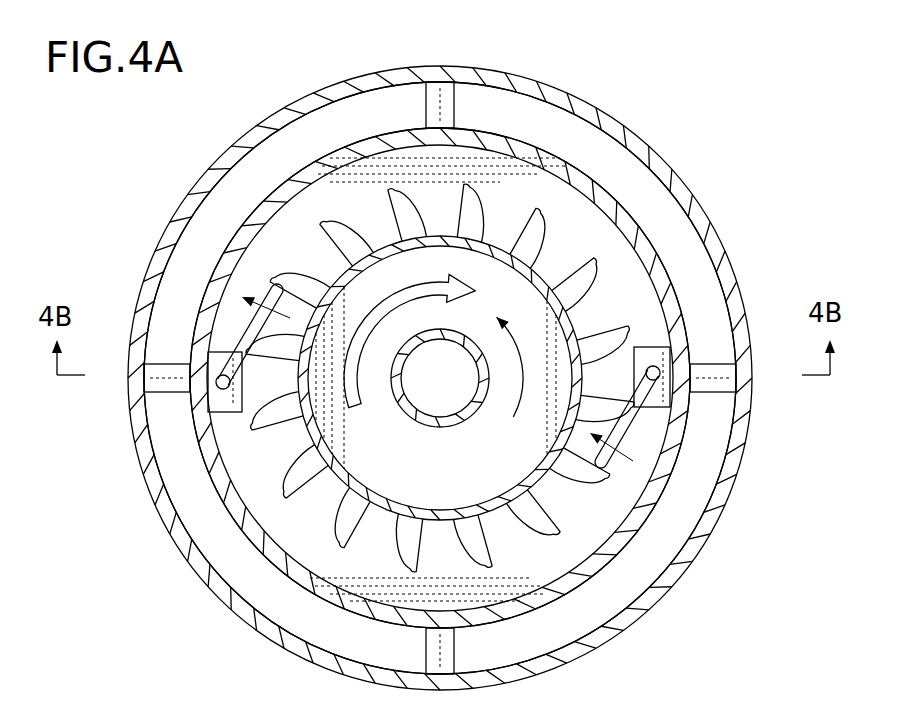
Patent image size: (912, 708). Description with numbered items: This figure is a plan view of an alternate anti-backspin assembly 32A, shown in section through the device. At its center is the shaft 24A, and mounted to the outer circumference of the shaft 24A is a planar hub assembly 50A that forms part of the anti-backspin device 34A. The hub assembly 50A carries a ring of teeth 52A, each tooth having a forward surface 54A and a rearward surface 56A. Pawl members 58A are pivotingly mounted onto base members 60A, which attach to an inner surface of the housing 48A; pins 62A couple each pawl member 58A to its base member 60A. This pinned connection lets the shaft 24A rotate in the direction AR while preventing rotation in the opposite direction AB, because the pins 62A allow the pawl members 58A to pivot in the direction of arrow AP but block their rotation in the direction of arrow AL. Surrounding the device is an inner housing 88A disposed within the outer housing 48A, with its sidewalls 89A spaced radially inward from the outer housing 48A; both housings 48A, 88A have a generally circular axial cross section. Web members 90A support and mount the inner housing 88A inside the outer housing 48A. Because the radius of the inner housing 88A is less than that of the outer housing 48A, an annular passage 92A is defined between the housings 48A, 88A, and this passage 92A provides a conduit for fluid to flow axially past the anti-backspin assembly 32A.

The shaft 24A is at (440, 424).
The anti-backspin assembly 32A is at (441, 354).
The anti-backspin device 34A is at (372, 200).
The outer housing 48A is at (695, 568).
The planar hub assembly 50A is at (325, 435).
The teeth 52A is at (612, 262).
The forward surface 54A is at (333, 518).
The rearward surface 56A is at (335, 592).
The pawl member 58A is at (618, 428).
The base member 60A is at (680, 365).
The pin 62A is at (662, 335).
The inner housing 88A is at (653, 515).
The sidewalls 89A is at (505, 137).
The web members 90A is at (150, 397).
The annular passage 92A is at (173, 472).
The direction of shaft rotation AR is at (362, 396).
The opposite direction of rotation AB is at (512, 405).
The direction of pawl pivoting AP is at (250, 291).
The direction of blocked pawl rotation AL is at (623, 458).